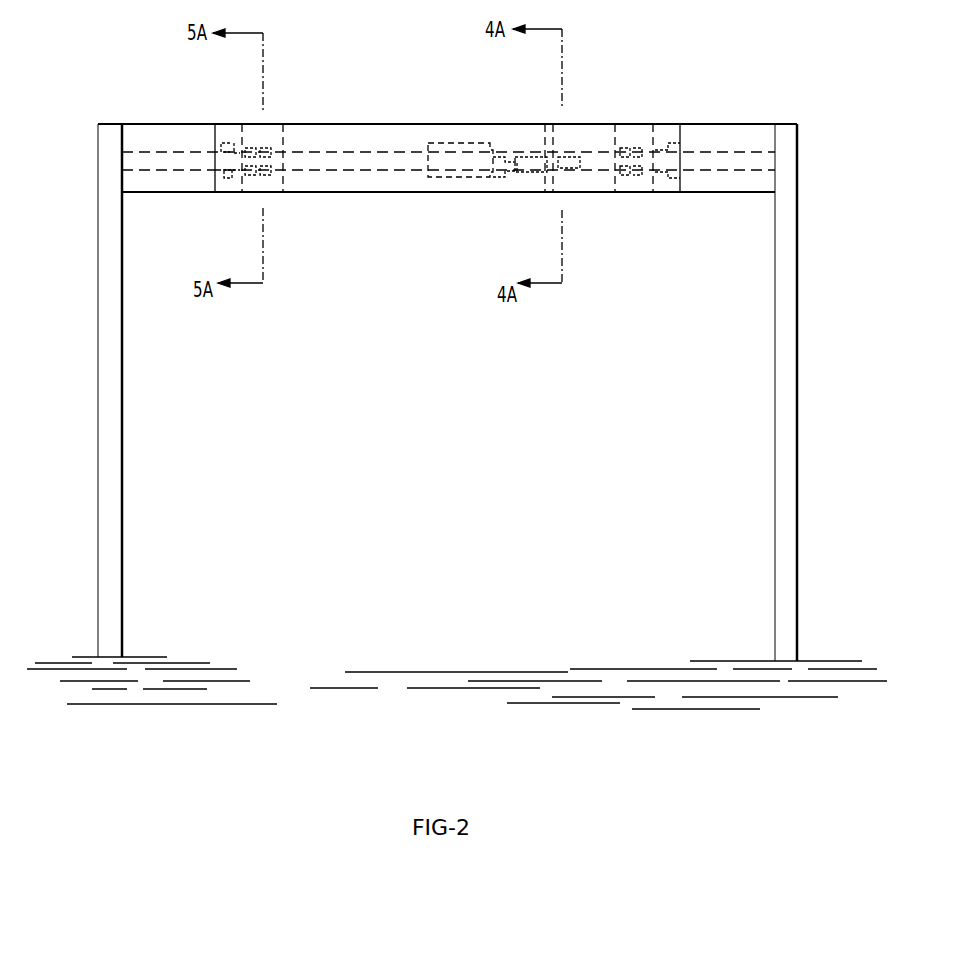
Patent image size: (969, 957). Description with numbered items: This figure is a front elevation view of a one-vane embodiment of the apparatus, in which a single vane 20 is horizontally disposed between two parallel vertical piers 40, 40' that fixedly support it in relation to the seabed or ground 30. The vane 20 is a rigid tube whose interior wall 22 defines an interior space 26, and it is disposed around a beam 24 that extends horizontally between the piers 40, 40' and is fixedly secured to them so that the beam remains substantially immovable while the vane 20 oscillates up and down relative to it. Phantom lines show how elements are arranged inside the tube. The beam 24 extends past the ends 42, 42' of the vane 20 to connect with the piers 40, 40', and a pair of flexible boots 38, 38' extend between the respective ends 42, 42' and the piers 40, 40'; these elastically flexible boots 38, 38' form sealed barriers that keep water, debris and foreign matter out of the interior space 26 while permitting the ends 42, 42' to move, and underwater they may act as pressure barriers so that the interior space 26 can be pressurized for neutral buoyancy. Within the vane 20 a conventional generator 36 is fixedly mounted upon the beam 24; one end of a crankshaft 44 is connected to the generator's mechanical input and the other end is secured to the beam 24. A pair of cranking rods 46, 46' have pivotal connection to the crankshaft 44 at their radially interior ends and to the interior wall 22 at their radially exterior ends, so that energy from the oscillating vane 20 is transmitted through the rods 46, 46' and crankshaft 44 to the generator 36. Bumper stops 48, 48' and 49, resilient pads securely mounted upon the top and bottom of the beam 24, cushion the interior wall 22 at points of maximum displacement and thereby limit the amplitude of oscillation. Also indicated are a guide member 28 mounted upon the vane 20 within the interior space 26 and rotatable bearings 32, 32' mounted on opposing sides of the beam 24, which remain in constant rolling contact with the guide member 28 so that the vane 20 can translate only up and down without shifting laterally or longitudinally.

The vane 20 is at (352, 123).
The interior wall 22 is at (742, 127).
The beam 24 is at (382, 160).
The interior space 26 is at (392, 148).
The guide member 28 is at (273, 187).
The seabed or ground 30 is at (617, 670).
The rotatable bearing 32 is at (443, 92).
The rotatable bearing 32' is at (443, 214).
The generator 36 is at (443, 167).
The flexible boot 38 is at (152, 122).
The flexible boot 38' is at (727, 197).
The pier 40 is at (81, 390).
The pier 40' is at (824, 392).
The vane end 42 is at (187, 125).
The vane end 42' is at (684, 210).
The crankshaft 44 is at (537, 173).
The cranking rod 46 is at (514, 130).
The cranking rod 46' is at (485, 211).
The bumper stop 48 is at (207, 212).
The bumper stop 48' is at (221, 105).
The bumper stop 49 is at (668, 147).